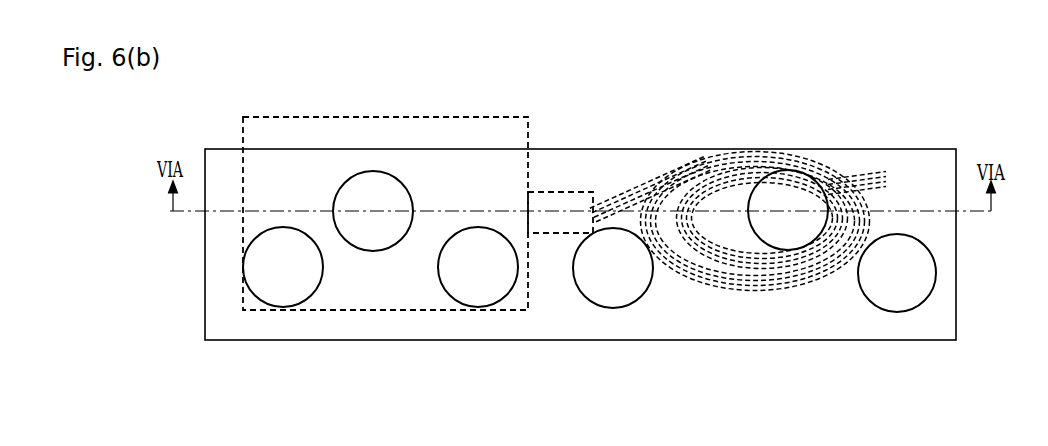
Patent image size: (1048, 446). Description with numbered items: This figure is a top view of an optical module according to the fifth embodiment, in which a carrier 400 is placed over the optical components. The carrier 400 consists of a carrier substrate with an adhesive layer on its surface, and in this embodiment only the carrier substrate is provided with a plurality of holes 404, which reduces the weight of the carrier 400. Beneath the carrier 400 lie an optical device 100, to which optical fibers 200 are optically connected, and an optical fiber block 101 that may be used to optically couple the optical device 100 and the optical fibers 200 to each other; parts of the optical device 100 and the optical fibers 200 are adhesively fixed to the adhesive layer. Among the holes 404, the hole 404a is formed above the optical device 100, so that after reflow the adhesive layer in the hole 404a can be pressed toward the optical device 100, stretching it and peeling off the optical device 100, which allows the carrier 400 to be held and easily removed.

The optical device 100 is at (390, 290).
The optical fiber block 101 is at (558, 224).
The optical fibers 200 is at (738, 285).
The carrier 400 is at (943, 148).
The holes 404 is at (893, 310).
The holes formed above the optical device 404a is at (400, 190).